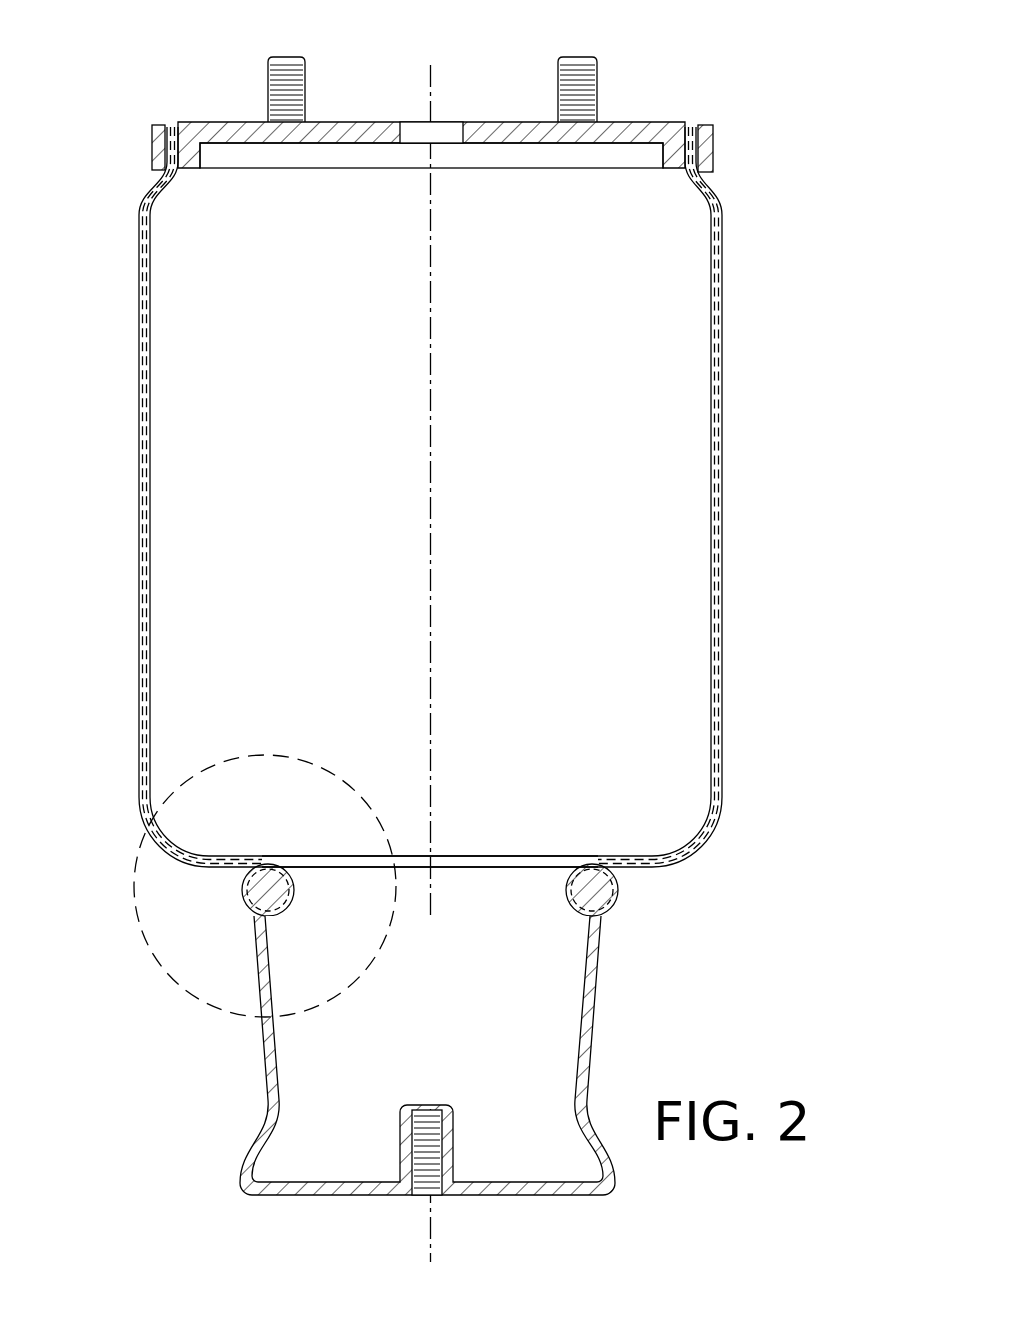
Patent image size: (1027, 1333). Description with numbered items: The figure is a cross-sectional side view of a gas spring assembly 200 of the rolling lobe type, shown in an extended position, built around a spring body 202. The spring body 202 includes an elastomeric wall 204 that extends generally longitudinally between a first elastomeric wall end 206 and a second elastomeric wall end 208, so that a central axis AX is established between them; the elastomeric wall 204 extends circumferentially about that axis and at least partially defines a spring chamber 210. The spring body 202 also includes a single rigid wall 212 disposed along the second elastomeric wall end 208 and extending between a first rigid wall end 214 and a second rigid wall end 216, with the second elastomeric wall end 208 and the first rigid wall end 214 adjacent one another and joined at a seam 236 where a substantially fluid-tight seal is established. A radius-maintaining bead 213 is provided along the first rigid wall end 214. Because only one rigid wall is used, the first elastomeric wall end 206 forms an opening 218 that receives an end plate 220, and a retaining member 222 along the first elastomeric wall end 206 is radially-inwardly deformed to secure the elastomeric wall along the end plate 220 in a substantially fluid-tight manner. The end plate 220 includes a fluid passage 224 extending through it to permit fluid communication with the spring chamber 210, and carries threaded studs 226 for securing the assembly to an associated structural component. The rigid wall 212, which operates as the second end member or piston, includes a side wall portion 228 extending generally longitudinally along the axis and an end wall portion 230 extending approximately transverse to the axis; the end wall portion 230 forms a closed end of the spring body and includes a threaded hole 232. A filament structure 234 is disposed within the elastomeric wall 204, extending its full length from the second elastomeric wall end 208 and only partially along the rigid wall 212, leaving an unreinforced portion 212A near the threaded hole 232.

The gas spring assembly 200 is at (750, 345).
The spring body 202 is at (657, 890).
The elastomeric wall 204 is at (136, 480).
The first elastomeric wall end 206 is at (170, 194).
The second elastomeric wall end 208 is at (613, 843).
The spring chamber 210 is at (670, 443).
The rigid wall 212 is at (259, 1081).
The unreinforced portion 212A is at (373, 1180).
The radius-maintaining bead 213 is at (272, 890).
The first rigid wall end 214 is at (562, 911).
The second rigid wall end 216 is at (629, 1192).
The opening 218 is at (517, 194).
The end plate 220 is at (232, 121).
The retaining member 222 is at (718, 137).
The fluid passage 224 is at (446, 127).
The threaded studs 226 is at (290, 56).
The side wall portion 228 is at (598, 994).
The end wall portion 230 is at (465, 1196).
The threaded hole 232 is at (413, 1193).
The filament structure 234 is at (729, 735).
The seam 236 is at (450, 856).